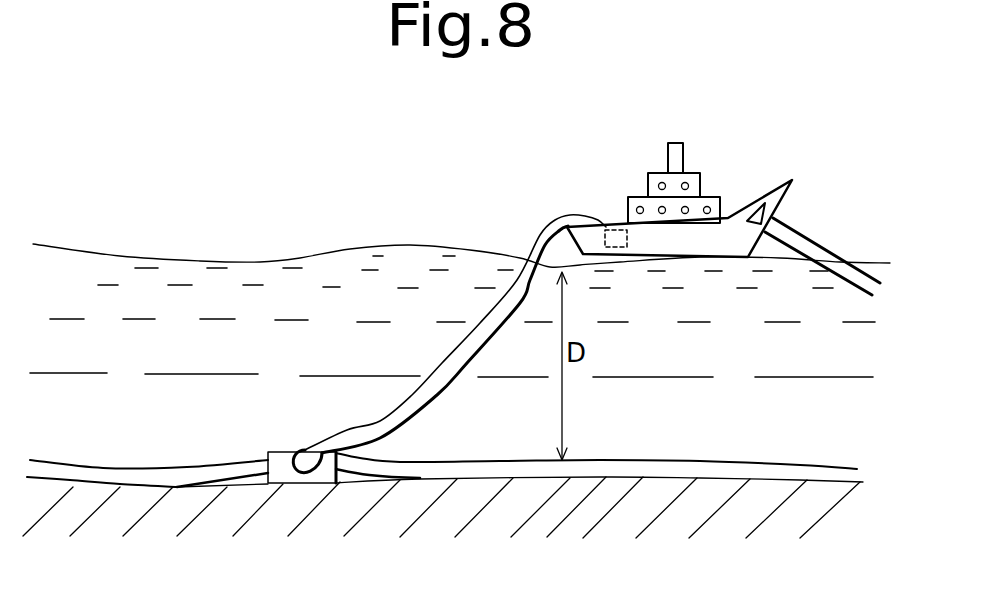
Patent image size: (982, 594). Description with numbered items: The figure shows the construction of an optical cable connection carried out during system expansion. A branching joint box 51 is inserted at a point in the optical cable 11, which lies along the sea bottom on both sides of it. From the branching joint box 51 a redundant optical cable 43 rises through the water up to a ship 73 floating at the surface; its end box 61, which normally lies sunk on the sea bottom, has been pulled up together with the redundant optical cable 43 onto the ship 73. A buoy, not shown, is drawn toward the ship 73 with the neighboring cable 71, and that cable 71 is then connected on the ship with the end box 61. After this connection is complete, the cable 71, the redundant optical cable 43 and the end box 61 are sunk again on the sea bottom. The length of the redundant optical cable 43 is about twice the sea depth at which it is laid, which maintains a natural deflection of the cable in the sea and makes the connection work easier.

The optical cable 11 is at (108, 470).
The redundant optical cable 43 is at (443, 370).
The branching joint box 51 is at (283, 452).
The end box 61 is at (612, 228).
The cable 71 is at (810, 237).
The ship 73 is at (721, 197).